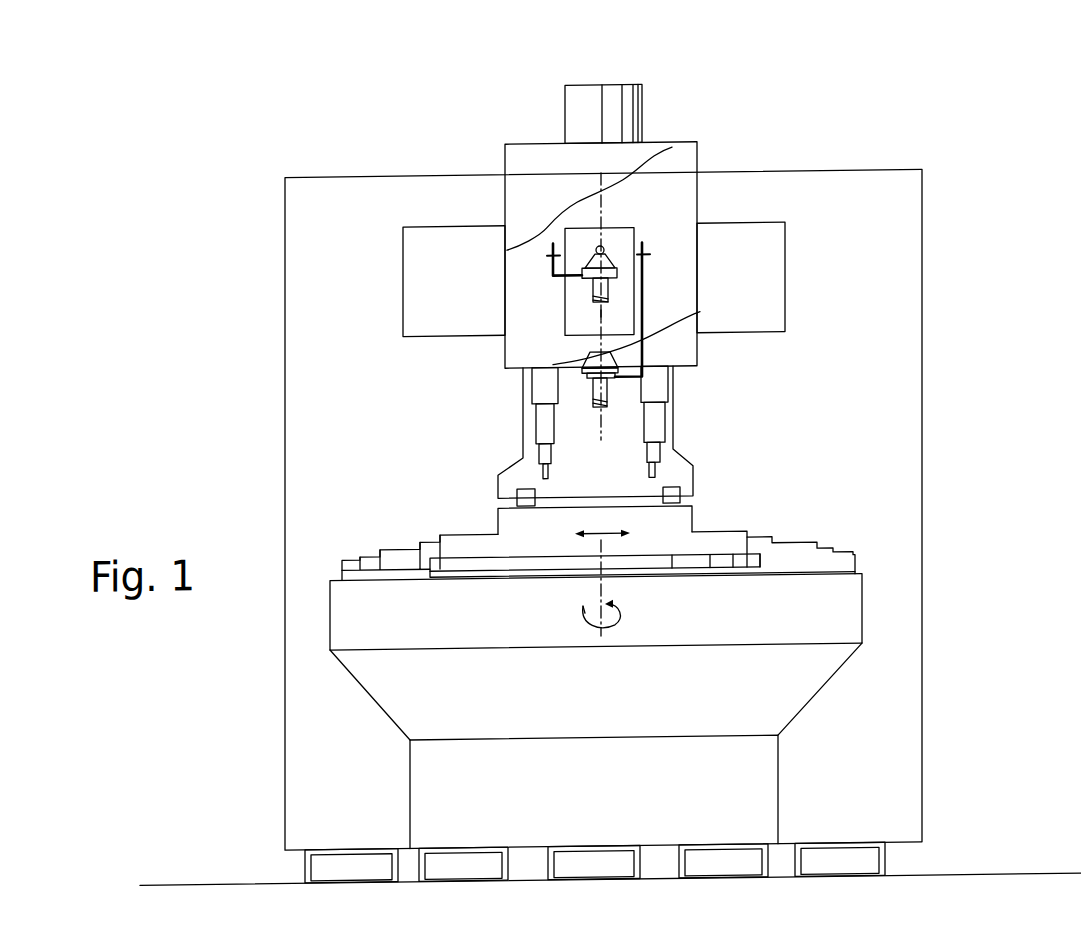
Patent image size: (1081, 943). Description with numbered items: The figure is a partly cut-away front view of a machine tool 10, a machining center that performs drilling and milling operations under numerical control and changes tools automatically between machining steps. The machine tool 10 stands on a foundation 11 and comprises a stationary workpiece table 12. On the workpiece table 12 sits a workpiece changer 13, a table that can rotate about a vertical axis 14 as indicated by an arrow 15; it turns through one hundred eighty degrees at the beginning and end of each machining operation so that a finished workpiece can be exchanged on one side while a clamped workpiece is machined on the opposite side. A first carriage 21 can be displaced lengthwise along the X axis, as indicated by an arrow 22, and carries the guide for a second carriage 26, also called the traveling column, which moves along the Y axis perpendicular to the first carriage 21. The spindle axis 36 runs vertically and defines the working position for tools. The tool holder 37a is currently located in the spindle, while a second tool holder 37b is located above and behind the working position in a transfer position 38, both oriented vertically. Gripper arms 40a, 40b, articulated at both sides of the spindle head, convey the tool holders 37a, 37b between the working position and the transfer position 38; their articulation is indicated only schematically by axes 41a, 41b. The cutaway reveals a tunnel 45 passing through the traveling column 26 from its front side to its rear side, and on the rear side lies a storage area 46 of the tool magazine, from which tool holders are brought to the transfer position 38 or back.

The machine tool 10 is at (960, 225).
The foundation 11 is at (975, 874).
The workpiece table 12 is at (843, 616).
The workpiece changer 13 is at (725, 561).
The vertical axis 14 is at (610, 608).
The arrow 15 is at (583, 607).
The first carriage 21 is at (455, 529).
The arrow 22 is at (608, 531).
The second carriage (traveling column) 26 is at (695, 454).
The spindle axis 36 is at (601, 425).
The tool holder 37a is at (593, 400).
The second tool holder 37b is at (593, 301).
The transfer position 38 is at (601, 314).
The gripper arm 40a is at (553, 275).
The gripper arm 40b is at (643, 294).
The axis 41a is at (552, 245).
The axis 41b is at (644, 244).
The tunnel 45 is at (628, 235).
The storage area 46 is at (785, 251).